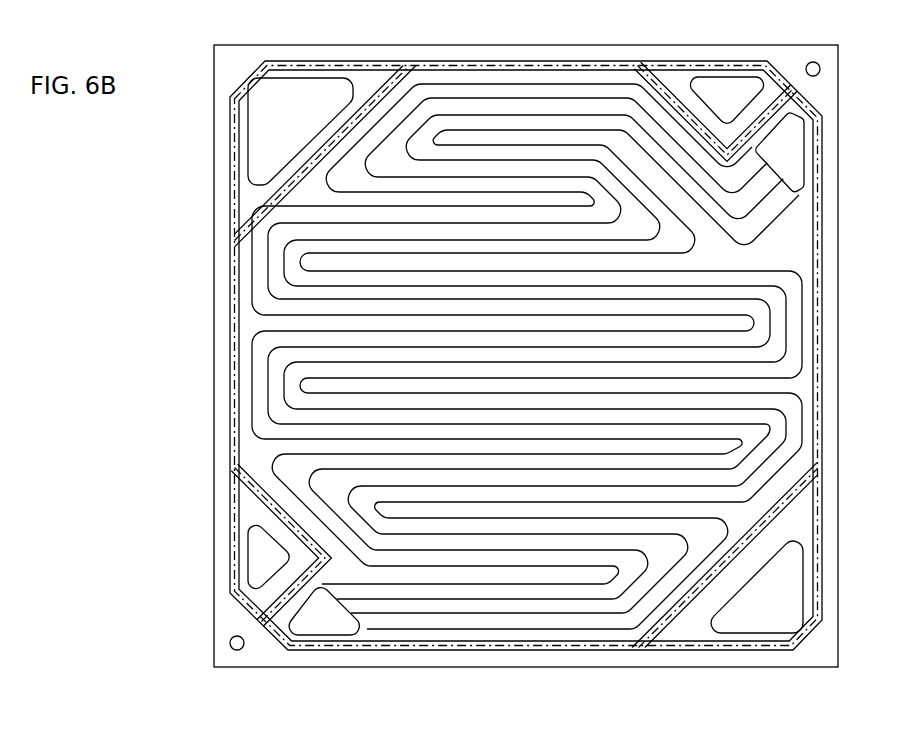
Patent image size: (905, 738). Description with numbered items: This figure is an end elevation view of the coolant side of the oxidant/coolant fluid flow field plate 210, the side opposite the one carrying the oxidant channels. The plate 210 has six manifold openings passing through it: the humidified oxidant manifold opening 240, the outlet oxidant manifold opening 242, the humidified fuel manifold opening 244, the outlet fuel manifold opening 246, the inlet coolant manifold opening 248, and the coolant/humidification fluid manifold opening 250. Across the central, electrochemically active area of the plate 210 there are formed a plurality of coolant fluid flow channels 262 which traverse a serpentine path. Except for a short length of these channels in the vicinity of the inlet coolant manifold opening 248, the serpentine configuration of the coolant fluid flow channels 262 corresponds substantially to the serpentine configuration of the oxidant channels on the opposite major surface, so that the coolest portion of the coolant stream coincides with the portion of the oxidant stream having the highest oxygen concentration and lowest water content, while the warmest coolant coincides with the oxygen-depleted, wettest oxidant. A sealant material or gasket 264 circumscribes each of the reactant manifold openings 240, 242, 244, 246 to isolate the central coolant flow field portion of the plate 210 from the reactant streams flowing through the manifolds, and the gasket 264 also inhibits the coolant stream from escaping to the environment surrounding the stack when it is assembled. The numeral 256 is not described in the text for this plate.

The oxidant/coolant fluid flow field plate 210 is at (765, 47).
The humidified oxidant manifold opening 240 is at (737, 622).
The outlet oxidant manifold opening 242 is at (273, 120).
The humidified fuel manifold opening 244 is at (262, 548).
The outlet fuel manifold opening 246 is at (708, 90).
The inlet coolant manifold opening 248 is at (790, 130).
The coolant/humidification fluid manifold opening 250 is at (295, 627).
The flow channels 256 is at (514, 115).
The coolant fluid flow channels 262 is at (527, 128).
The sealant material or gasket 264 is at (372, 30).